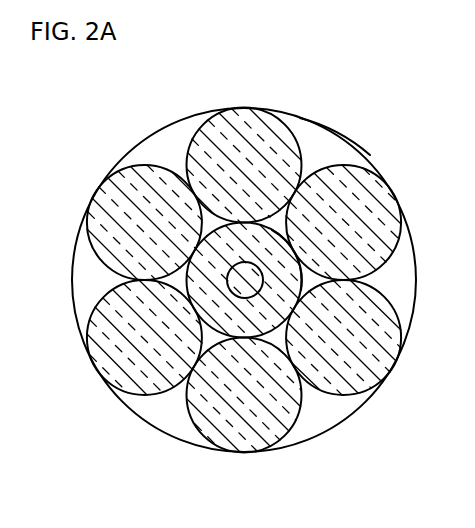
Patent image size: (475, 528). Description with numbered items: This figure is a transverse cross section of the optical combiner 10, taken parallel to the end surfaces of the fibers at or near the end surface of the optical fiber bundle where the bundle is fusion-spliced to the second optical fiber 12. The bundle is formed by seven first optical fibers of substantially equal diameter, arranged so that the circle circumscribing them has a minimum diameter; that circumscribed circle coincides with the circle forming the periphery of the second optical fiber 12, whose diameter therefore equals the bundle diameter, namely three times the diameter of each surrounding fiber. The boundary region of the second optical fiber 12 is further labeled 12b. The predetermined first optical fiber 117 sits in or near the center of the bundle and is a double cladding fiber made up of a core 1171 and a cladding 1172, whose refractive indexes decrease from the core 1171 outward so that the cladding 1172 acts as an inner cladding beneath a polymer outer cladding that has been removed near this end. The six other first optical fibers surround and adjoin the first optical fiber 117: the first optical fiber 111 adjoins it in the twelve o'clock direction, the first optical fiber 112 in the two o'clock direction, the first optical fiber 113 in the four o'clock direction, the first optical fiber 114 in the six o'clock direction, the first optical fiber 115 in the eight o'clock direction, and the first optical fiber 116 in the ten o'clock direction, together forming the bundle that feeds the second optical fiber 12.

The optical combiner 10 is at (381, 61).
The second optical fiber 12 is at (302, 117).
The inner surface of sheath 12b is at (353, 152).
The first optical fiber 111 is at (245, 108).
The first optical fiber 112 is at (393, 194).
The first optical fiber 113 is at (393, 365).
The first optical fiber 114 is at (245, 453).
The first optical fiber 115 is at (95, 365).
The first optical fiber 116 is at (95, 194).
The first optical fiber 117 is at (202, 235).
The core 1171 is at (229, 271).
The cladding 1172 is at (293, 293).